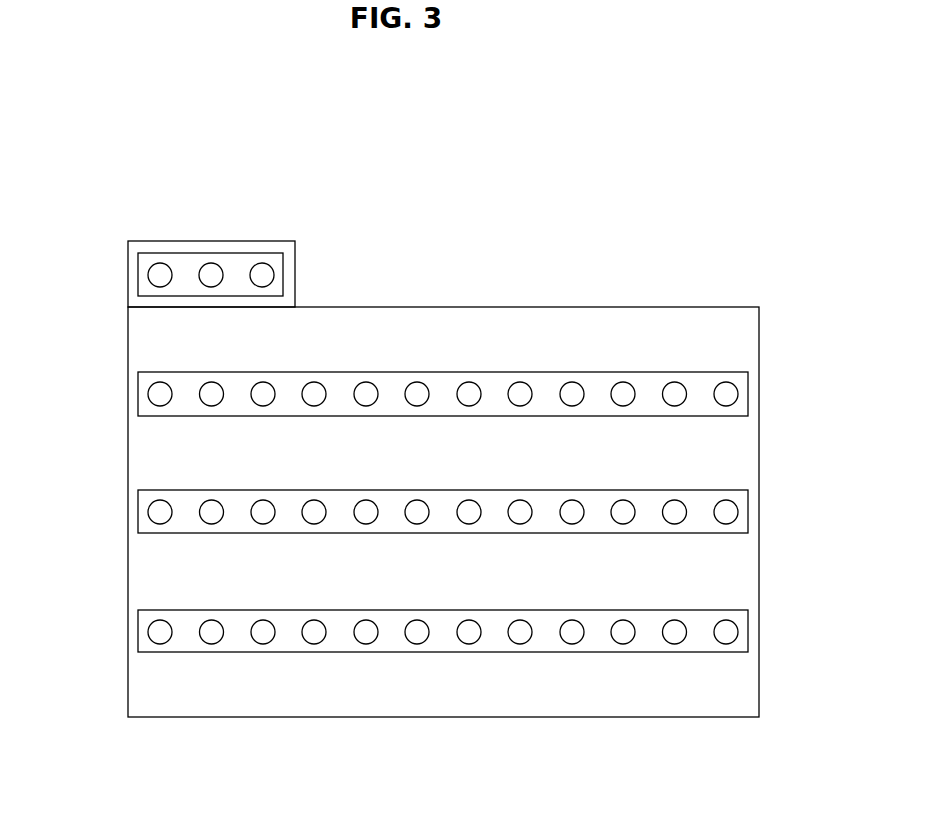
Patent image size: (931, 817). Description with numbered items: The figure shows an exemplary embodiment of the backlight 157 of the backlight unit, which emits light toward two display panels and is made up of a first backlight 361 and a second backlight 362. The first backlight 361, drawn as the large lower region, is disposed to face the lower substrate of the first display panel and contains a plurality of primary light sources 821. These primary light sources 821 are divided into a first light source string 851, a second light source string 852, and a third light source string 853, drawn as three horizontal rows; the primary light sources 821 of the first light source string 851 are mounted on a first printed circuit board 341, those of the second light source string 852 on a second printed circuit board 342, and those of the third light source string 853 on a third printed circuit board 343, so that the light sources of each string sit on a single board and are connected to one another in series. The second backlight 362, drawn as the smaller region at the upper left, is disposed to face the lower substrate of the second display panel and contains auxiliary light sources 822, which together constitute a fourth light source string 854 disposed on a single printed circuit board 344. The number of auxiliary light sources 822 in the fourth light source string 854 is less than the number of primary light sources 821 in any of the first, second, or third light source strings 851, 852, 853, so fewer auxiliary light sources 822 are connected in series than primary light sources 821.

The backlight 157 is at (593, 231).
The first backlight 361 is at (467, 340).
The second backlight 362 is at (270, 250).
The first printed circuit board 341 is at (650, 635).
The second printed circuit board 342 is at (652, 500).
The third printed circuit board 343 is at (648, 385).
The printed circuit board 344 is at (236, 265).
The primary light sources 821 is at (726, 395).
The auxiliary light sources 822 is at (262, 275).
The first light source string 851 is at (118, 610).
The second light source string 852 is at (118, 490).
The third light source string 853 is at (118, 372).
The fourth light source string 854 is at (118, 255).